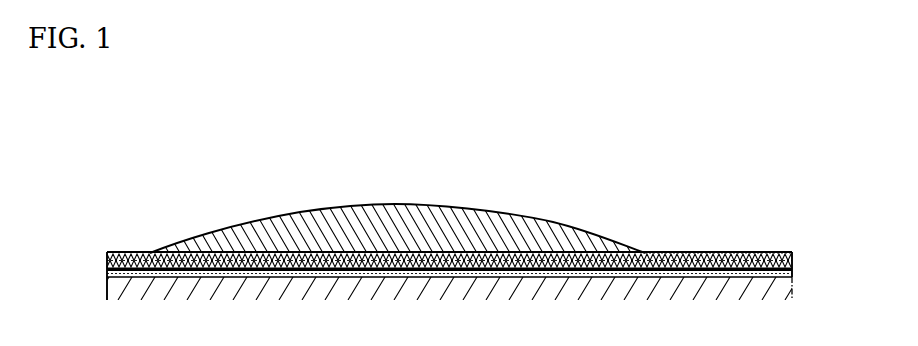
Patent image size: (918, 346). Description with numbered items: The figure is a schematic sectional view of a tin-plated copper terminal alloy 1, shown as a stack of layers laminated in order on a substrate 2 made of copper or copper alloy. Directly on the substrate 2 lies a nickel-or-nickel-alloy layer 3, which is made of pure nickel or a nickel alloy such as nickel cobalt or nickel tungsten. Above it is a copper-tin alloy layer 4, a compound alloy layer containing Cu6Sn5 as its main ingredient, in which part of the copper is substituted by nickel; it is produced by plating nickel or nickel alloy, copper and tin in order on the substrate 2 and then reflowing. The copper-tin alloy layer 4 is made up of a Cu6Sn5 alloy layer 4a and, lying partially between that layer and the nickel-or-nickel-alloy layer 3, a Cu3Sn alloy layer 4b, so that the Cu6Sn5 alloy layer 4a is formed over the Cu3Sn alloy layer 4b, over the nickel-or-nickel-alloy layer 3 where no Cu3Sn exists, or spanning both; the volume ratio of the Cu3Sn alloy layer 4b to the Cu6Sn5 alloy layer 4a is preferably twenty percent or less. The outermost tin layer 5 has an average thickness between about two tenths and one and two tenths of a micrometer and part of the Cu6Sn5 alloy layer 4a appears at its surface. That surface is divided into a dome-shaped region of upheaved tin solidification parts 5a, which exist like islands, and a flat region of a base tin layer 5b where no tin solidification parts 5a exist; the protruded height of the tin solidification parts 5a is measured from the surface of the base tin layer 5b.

The tin-plated copper terminal alloy 1 is at (373, 173).
The substrate 2 is at (787, 294).
The nickel-or-nickel-alloy layer 3 is at (793, 274).
The copper-tin alloy layer 4 is at (476, 295).
The Cu6Sn5 alloy layer 4a is at (321, 277).
The Cu3Sn alloy layer 4b is at (281, 271).
The tin layer 5 is at (426, 163).
The tin solidification parts 5a is at (553, 222).
The base tin layer 5b is at (685, 252).